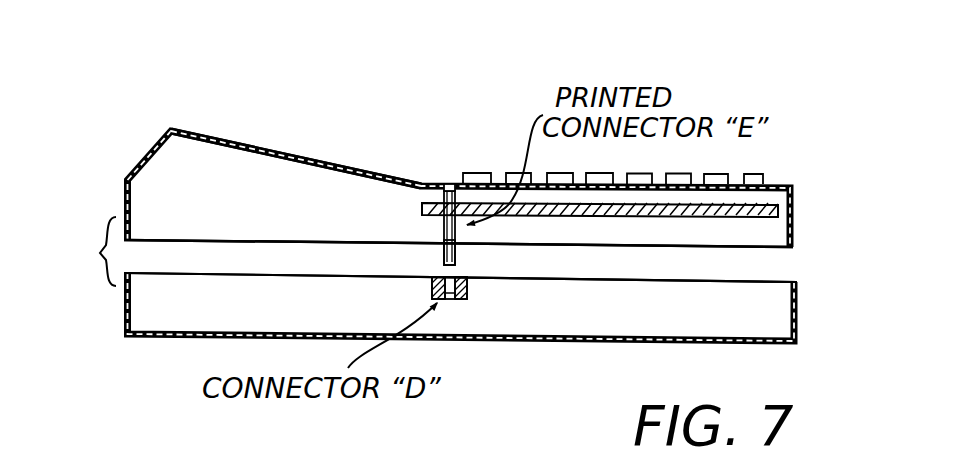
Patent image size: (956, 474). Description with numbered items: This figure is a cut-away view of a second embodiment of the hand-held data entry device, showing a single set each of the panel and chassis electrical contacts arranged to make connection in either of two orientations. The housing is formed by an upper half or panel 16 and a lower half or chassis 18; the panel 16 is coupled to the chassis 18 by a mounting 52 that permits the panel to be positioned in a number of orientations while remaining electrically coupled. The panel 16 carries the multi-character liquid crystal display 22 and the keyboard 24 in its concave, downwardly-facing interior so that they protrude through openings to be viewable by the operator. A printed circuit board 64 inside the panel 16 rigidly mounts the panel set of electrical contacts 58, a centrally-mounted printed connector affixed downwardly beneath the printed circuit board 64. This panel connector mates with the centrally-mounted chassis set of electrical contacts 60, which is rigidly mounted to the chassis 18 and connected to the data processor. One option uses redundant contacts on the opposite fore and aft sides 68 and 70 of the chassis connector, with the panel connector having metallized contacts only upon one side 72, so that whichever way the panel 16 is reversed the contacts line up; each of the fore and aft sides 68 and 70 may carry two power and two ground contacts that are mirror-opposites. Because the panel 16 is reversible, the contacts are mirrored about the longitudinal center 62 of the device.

The panel 16 is at (191, 128).
The multi-character liquid crystal display 22 is at (273, 147).
The chassis 18 is at (168, 337).
The mounting 52 is at (475, 255).
The keyboard 24 is at (487, 162).
The printed circuit board 64 is at (772, 206).
The panel set of electrical contacts 58 is at (443, 224).
The longitudinal center 62 is at (446, 188).
The one side of the connector 72 is at (444, 255).
The chassis set of electrical contacts 60 is at (474, 303).
The fore side of the connector 68 is at (432, 282).
The aft side of the connector 70 is at (470, 283).